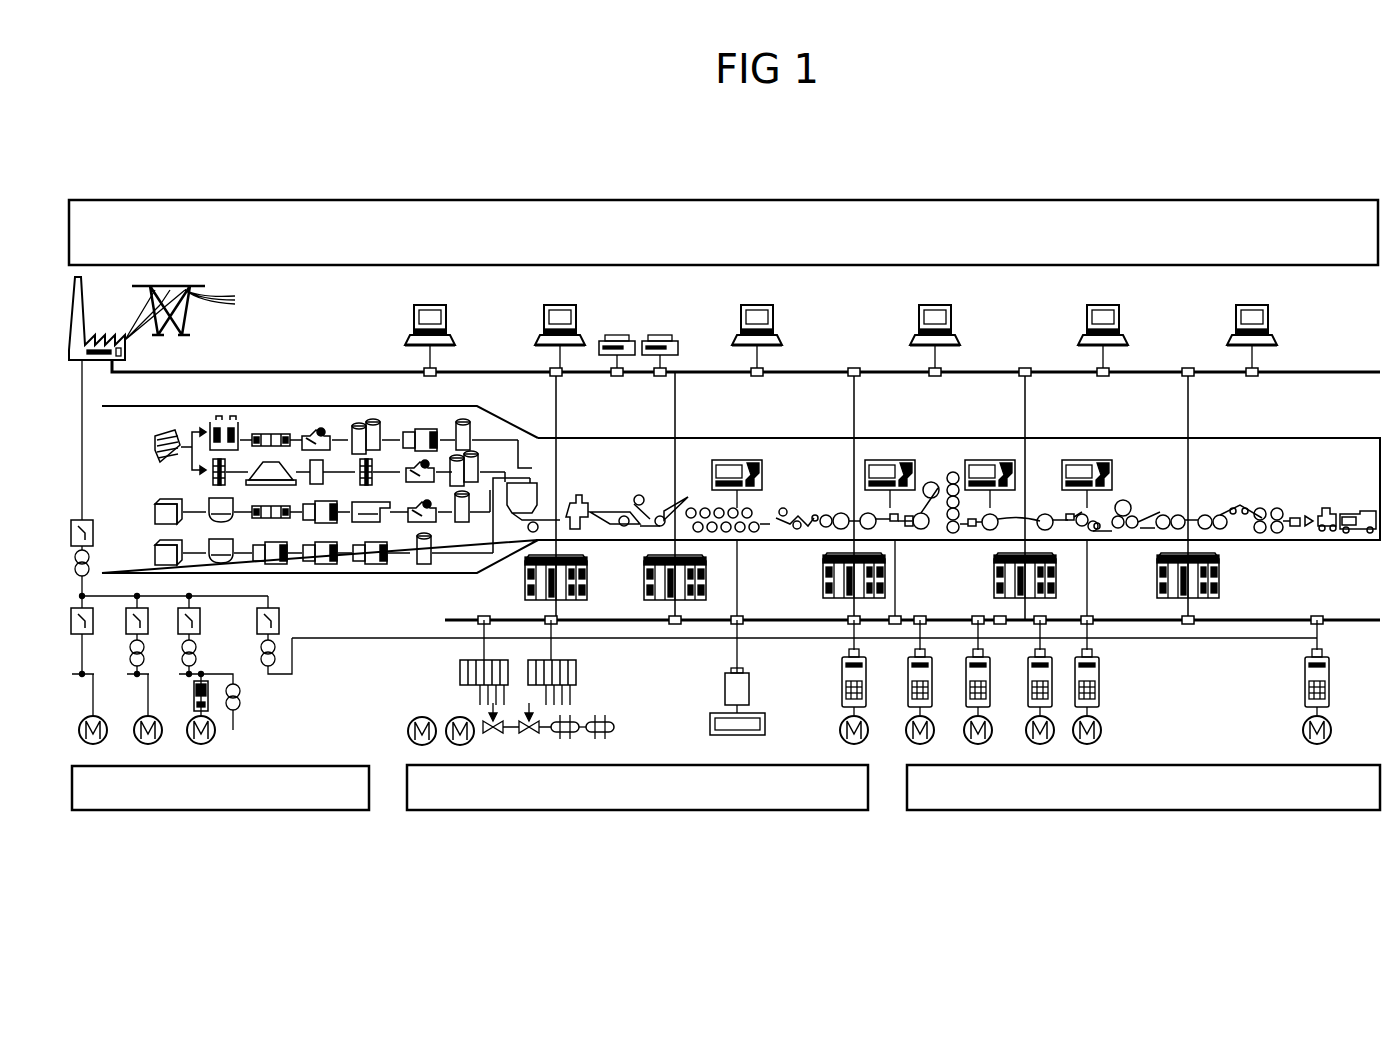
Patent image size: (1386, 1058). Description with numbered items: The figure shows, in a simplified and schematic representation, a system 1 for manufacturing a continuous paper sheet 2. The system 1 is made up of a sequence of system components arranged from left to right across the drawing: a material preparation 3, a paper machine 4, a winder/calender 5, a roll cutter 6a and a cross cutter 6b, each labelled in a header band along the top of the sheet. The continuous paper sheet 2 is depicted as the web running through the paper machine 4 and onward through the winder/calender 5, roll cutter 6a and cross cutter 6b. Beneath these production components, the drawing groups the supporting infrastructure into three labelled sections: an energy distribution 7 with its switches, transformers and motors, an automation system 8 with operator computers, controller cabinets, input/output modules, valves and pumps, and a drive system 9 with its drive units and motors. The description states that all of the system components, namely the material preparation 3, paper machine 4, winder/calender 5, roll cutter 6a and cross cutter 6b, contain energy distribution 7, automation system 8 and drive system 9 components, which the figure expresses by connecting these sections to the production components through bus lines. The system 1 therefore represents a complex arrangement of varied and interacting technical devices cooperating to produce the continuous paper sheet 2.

The system 1 is at (1297, 124).
The continuous paper sheet 2 is at (781, 522).
The material preparation 3 is at (219, 184).
The paper machine 4 is at (592, 184).
The winder/calender 5 is at (916, 184).
The roll cutter 6a is at (1096, 184).
The cross cutter 6b is at (1242, 184).
The energy distribution 7 is at (212, 840).
The automation system 8 is at (627, 840).
The drive system 9 is at (1124, 840).